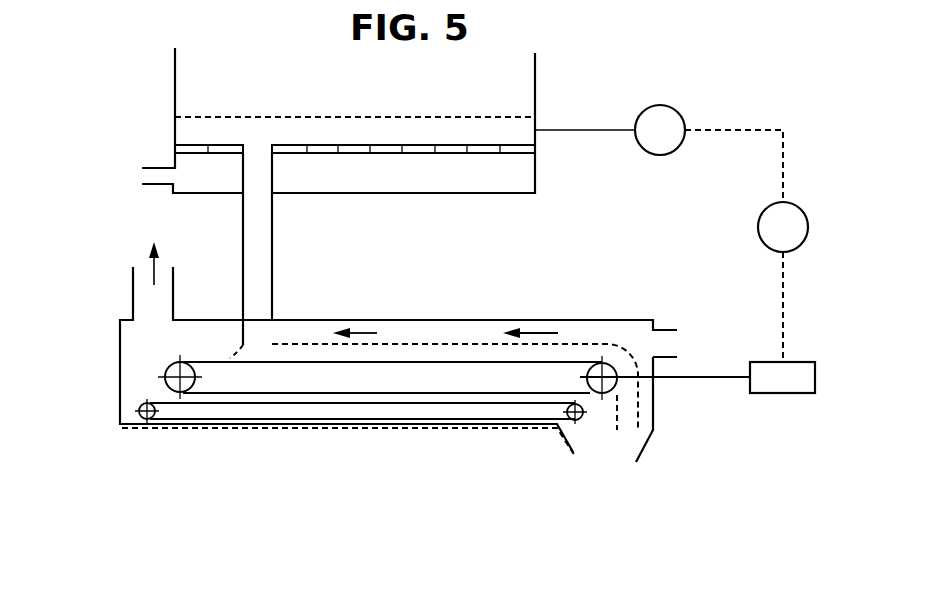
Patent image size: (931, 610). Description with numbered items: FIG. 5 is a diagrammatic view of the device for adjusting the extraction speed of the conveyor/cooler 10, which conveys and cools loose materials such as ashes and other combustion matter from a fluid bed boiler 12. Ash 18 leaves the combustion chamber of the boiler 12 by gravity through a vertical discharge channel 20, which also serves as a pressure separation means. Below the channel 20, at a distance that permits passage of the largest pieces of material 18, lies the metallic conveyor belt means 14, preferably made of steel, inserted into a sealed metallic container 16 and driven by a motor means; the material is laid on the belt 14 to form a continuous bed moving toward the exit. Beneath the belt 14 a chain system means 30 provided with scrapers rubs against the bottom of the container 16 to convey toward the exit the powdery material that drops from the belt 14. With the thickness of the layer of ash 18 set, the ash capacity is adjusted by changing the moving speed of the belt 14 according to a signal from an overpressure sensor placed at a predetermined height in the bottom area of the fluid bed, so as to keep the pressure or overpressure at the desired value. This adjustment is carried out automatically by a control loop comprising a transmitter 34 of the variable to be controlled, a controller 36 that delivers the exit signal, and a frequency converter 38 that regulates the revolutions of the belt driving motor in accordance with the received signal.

The conveyor/cooler 10 is at (88, 258).
The fluid bed boiler 12 is at (386, 128).
The metallic conveyor belt means 14 is at (210, 370).
The sealed metallic container 16 is at (435, 320).
The ash 18 is at (565, 355).
The vertical discharge channel 20 is at (275, 270).
The chain system means 30 is at (225, 407).
The transmitter 34 is at (641, 149).
The controller 36 is at (758, 236).
The frequency converter 38 is at (790, 394).